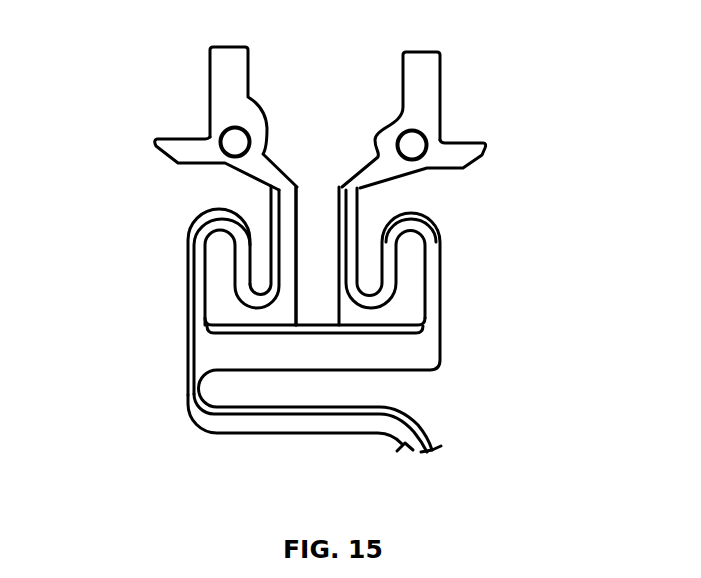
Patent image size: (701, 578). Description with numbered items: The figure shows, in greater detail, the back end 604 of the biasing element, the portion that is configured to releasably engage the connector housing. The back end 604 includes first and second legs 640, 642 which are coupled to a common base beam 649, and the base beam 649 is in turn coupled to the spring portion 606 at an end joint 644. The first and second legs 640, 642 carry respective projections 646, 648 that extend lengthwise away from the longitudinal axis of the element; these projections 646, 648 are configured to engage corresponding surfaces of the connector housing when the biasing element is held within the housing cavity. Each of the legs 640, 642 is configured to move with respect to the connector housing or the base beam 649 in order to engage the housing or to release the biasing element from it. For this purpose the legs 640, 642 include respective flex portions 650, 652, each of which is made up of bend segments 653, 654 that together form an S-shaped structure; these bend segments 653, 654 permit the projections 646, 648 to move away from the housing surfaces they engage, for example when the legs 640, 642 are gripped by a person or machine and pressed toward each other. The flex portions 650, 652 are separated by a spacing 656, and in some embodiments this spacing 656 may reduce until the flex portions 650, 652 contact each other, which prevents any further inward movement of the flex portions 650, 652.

The back end 604 is at (84, 438).
The spring portion 606 is at (465, 416).
The first leg 640 is at (155, 112).
The second leg 642 is at (498, 112).
The end joint 644 is at (166, 383).
The projection 646 is at (173, 162).
The projection 648 is at (457, 162).
The base beam 649 is at (365, 362).
The flex portion 650 is at (152, 268).
The flex portion 652 is at (466, 246).
The bend segment 653 is at (267, 300).
The bend segment 654 is at (217, 210).
The spacing 656 is at (300, 167).